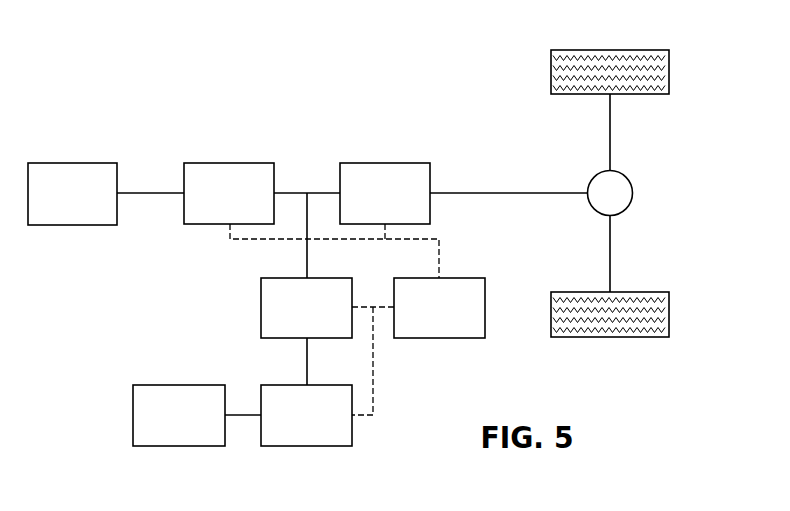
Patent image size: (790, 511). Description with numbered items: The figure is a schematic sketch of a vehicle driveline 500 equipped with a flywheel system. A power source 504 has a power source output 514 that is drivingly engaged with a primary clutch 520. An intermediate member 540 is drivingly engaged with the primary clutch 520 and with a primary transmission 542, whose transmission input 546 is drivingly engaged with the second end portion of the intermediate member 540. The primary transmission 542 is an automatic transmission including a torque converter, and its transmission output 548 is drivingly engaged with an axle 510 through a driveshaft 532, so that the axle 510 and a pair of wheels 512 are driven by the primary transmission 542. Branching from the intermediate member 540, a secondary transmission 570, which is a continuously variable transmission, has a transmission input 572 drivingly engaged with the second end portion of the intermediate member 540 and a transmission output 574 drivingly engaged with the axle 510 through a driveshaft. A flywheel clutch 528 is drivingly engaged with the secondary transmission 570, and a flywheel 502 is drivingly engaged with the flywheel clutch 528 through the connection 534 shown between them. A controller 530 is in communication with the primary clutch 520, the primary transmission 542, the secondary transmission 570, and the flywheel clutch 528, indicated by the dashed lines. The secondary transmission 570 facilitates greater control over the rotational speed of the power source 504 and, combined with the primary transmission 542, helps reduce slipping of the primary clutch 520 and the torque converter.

The vehicle driveline 500 is at (204, 78).
The flywheel 502 is at (178, 446).
The power source 504 is at (73, 163).
The axle 510 is at (611, 253).
The wheels 512 is at (610, 50).
The power source output 514 is at (150, 192).
The primary clutch 520 is at (228, 163).
The flywheel clutch 528 is at (307, 446).
The controller 530 is at (440, 338).
The driveshaft 532 is at (533, 192).
The power connection 534 is at (243, 415).
The intermediate member 540 is at (288, 192).
The primary transmission 542 is at (384, 163).
The transmission input 546 is at (339, 192).
The transmission output 548 is at (431, 192).
The secondary transmission 570 is at (261, 305).
The transmission input 572 is at (307, 276).
The transmission output 574 is at (307, 339).